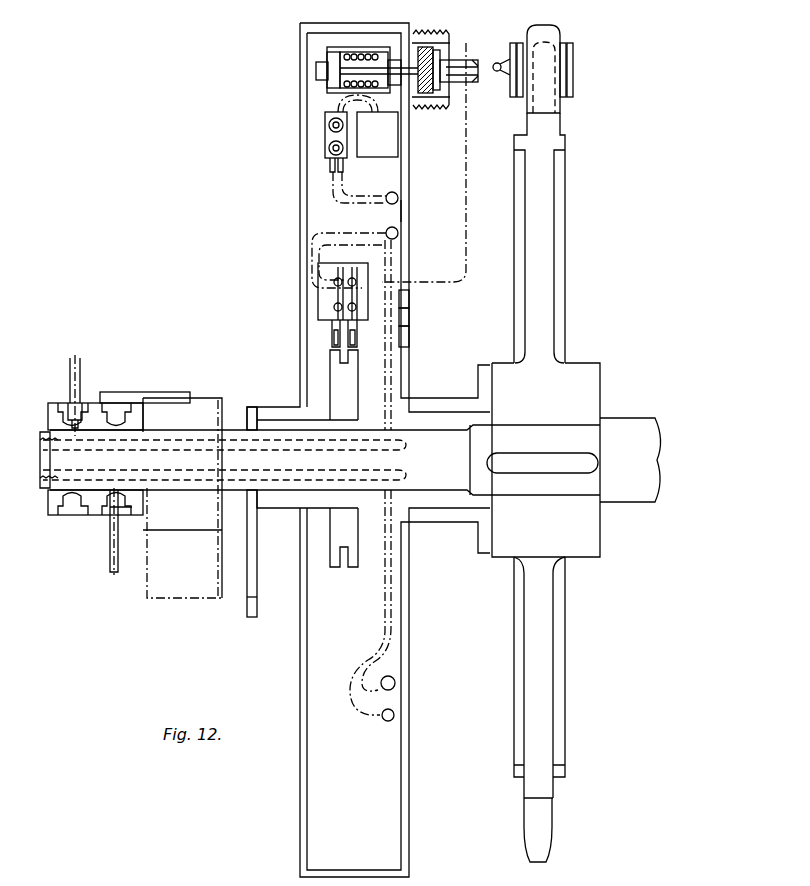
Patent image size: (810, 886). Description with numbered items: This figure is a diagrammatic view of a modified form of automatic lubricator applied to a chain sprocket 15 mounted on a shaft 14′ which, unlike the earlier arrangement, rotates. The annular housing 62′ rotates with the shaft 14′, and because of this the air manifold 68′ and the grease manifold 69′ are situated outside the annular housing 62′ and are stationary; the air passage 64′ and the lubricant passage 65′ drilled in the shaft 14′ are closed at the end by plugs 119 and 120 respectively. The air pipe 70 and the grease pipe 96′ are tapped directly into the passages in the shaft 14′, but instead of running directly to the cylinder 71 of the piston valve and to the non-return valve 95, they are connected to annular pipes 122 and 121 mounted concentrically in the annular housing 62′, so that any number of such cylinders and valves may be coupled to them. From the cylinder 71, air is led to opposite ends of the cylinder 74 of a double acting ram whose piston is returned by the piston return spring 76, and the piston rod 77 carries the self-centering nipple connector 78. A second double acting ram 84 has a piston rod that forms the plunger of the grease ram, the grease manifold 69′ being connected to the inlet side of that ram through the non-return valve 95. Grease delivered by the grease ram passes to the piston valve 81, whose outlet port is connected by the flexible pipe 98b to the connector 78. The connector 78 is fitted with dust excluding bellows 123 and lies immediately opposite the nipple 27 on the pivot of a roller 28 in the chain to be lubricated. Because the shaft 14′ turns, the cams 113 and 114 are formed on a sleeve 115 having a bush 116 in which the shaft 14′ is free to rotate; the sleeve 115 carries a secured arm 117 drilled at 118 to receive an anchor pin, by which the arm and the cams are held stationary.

The shaft 14′ is at (633, 492).
The chain sprocket 15 is at (564, 648).
The nipple 27 is at (498, 74).
The roller 28 is at (553, 32).
The annular housing 62′ is at (403, 211).
The air passage 64′ is at (98, 440).
The lubricant passage 65′ is at (183, 478).
The air manifold 68′ is at (73, 400).
The grease manifold 69′ is at (127, 512).
The air pipe 70 is at (400, 386).
The cylinder of piston valve 71 is at (330, 274).
The cylinder of double acting ram 74 is at (316, 82).
The piston return spring 76 is at (333, 60).
The piston rod 77 is at (363, 70).
The self-centering nipple connector 78 is at (470, 64).
The piston valve 81 is at (360, 318).
The double acting ram 84 is at (368, 126).
The non-return valve 95 is at (330, 140).
The grease pipe 96′ is at (385, 600).
The flexible pipe 98b is at (464, 273).
The cam 113 is at (353, 363).
The cam 114 is at (328, 357).
The sleeve 115 is at (285, 505).
The bush 116 is at (270, 408).
The arm 117 is at (255, 578).
The drilled hole 118 is at (250, 606).
The plug 119 is at (45, 438).
The plug 120 is at (45, 489).
The annular pipe 121 is at (398, 234).
The annular pipe 122 is at (396, 200).
The dust excluding bellows 123 is at (445, 28).